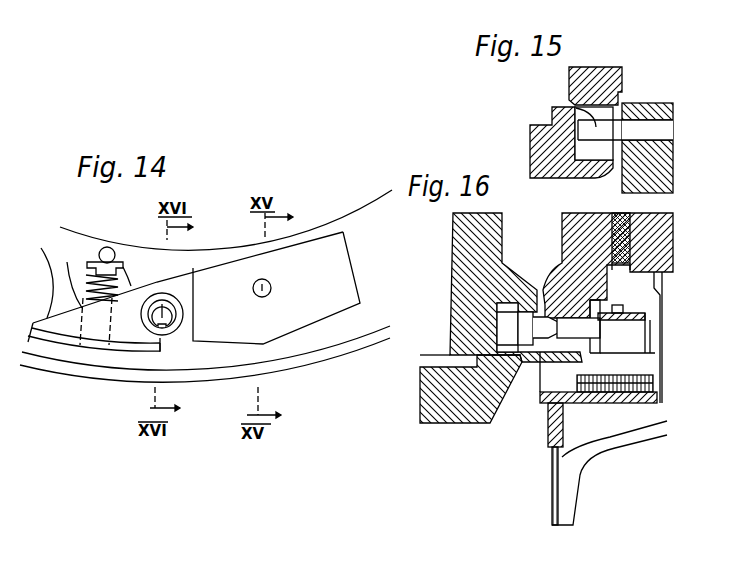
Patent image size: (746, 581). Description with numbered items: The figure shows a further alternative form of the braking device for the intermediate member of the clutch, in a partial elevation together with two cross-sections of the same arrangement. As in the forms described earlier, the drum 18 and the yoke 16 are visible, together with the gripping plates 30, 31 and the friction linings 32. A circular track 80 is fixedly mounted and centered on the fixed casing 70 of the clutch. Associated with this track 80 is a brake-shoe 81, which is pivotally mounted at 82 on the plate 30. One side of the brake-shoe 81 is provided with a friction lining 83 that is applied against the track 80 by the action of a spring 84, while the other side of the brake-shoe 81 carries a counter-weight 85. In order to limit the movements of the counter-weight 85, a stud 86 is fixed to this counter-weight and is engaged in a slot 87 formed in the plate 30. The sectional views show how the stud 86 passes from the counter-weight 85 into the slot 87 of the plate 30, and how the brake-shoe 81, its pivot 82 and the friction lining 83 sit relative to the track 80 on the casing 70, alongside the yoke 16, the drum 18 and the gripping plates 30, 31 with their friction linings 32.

In FIG. 16, the yoke 16 is at (470, 262).
In FIG. 16, the drum 18 is at (485, 408).
In FIG. 15, the gripping plate 30 is at (622, 90).
In FIG. 16, the gripping plate 30 is at (572, 242).
In FIG. 16, the gripping plate 31 is at (670, 337).
In FIG. 16, the friction linings 32 is at (615, 266).
In FIG. 16, the fixed casing 70 is at (567, 502).
In FIG. 14, the circular track 80 is at (307, 360).
In FIG. 16, the circular track 80 is at (647, 395).
In FIG. 14, the brake-shoe 81 is at (152, 339).
In FIG. 16, the brake-shoe 81 is at (585, 355).
In FIG. 14, the pivot 82 is at (165, 300).
In FIG. 16, the pivot 82 is at (535, 355).
In FIG. 14, the friction lining 83 is at (84, 353).
In FIG. 16, the friction lining 83 is at (620, 390).
In FIG. 14, the spring 84 is at (92, 272).
In FIG. 14, the counter-weight 85 is at (298, 243).
In FIG. 15, the counter-weight 85 is at (643, 107).
In FIG. 15, the stud 86 is at (575, 107).
In FIG. 15, the slot 87 is at (581, 163).